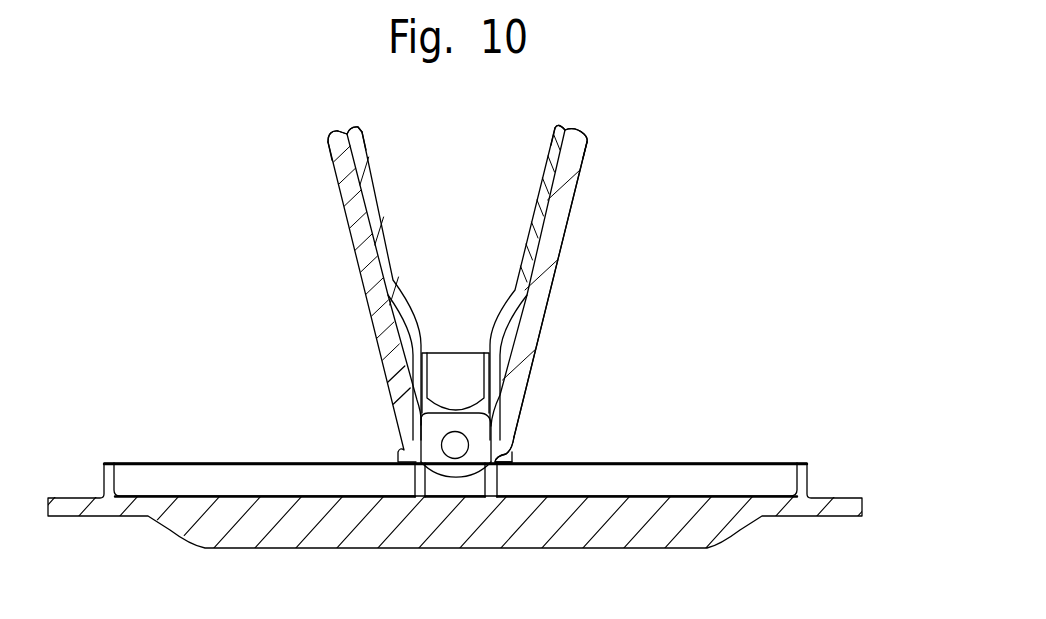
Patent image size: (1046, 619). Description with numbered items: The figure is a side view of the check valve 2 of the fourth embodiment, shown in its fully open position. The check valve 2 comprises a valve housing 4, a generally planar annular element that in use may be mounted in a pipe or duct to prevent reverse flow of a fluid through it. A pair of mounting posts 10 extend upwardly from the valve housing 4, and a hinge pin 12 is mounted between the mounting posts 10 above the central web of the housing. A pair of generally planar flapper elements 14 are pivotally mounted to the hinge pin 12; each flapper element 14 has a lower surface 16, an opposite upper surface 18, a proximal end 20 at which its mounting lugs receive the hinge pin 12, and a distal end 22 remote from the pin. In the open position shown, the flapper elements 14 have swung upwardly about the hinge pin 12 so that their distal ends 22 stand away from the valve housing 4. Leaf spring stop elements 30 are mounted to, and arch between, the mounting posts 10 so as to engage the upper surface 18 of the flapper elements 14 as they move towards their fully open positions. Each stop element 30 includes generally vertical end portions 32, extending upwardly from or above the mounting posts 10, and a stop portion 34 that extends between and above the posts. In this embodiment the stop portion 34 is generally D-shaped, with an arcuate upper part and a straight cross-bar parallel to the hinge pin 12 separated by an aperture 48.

The check valve 2 is at (182, 156).
The valve housing 4 is at (836, 497).
The mounting posts 10 is at (458, 368).
The hinge pin 12 is at (453, 445).
The flapper elements 14 is at (577, 275).
The lower surface 16 is at (565, 230).
The upper surface 18 is at (527, 290).
The proximal end 20 is at (500, 458).
The distal end 22 is at (580, 130).
The leaf spring stop elements 30 is at (371, 271).
The end portions 32 is at (400, 383).
The stop portion 34 is at (367, 157).
The aperture 48 is at (378, 211).